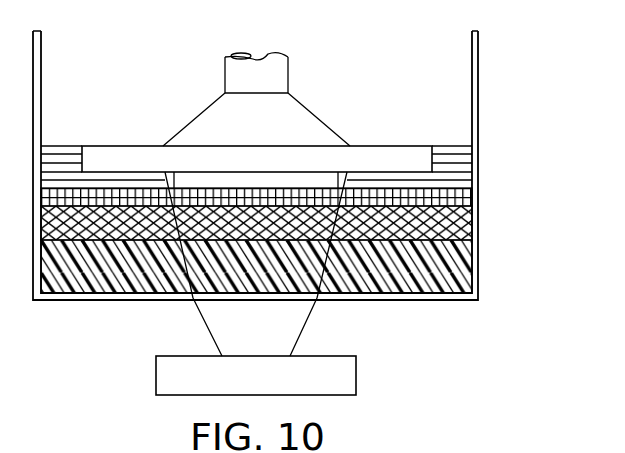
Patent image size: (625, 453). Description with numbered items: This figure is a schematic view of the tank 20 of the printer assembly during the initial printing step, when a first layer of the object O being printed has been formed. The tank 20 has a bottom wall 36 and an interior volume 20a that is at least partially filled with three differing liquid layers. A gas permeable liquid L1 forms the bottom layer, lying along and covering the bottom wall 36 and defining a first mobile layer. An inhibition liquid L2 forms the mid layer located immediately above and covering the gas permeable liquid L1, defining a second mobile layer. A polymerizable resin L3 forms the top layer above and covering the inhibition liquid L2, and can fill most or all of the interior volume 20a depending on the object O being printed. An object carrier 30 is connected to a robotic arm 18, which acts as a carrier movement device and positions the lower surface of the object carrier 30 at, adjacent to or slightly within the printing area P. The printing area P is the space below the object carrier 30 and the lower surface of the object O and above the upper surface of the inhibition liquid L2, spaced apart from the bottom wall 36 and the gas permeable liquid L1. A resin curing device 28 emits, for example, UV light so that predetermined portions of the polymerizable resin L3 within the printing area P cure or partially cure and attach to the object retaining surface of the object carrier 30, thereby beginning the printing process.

The robotic arm 18 is at (225, 67).
The printing area P is at (133, 182).
The object being printed O is at (234, 182).
The object carrier 30 is at (386, 155).
The interior volume 20a is at (431, 108).
The tank 20 is at (488, 52).
The polymerizable resin L3 is at (455, 167).
The inhibition liquid L2 is at (453, 198).
The gas permeable liquid L1 is at (457, 227).
The bottom wall 36 is at (435, 268).
The resin curing device 28 is at (156, 369).